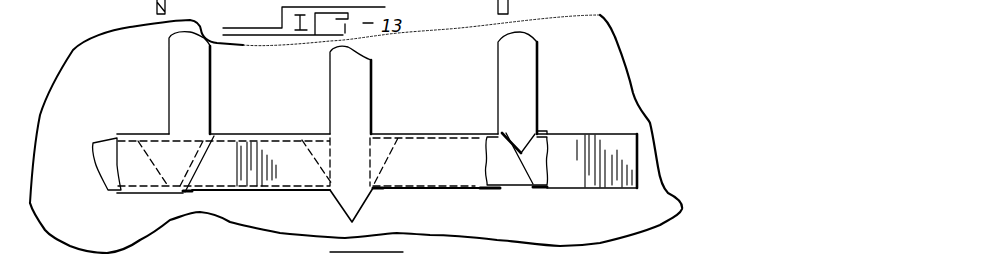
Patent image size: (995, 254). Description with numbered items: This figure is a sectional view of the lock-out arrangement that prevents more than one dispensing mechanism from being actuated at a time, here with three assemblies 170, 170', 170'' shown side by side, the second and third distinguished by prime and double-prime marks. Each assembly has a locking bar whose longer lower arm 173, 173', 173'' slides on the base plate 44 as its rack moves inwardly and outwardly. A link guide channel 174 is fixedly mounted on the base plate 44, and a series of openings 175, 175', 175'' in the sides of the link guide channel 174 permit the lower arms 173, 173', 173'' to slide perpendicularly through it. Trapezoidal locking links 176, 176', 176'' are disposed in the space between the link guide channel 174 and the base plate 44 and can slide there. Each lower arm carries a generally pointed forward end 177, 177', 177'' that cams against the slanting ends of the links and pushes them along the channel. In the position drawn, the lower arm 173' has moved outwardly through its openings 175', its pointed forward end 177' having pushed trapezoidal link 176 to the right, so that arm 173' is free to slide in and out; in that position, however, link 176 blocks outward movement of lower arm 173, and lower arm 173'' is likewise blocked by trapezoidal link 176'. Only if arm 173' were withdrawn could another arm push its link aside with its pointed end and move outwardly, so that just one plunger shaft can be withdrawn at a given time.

The base plate 44 is at (603, 55).
The assembly 170 is at (434, 109).
The assembly 170' is at (270, 100).
The assembly 170'' is at (128, 111).
The lower arm 173 is at (536, 82).
The lower arm 173' is at (369, 86).
The lower arm 173'' is at (136, 83).
The link guide channel 174 is at (618, 173).
The opening 175 is at (539, 157).
The opening 175' is at (345, 160).
The opening 175'' is at (146, 178).
The trapezoidal locking link 176 is at (510, 179).
The trapezoidal locking link 176' is at (299, 183).
The trapezoidal locking link 176'' is at (80, 176).
The pointed forward end 177 is at (547, 128).
The pointed forward end 177' is at (367, 212).
The pointed forward end 177'' is at (224, 146).